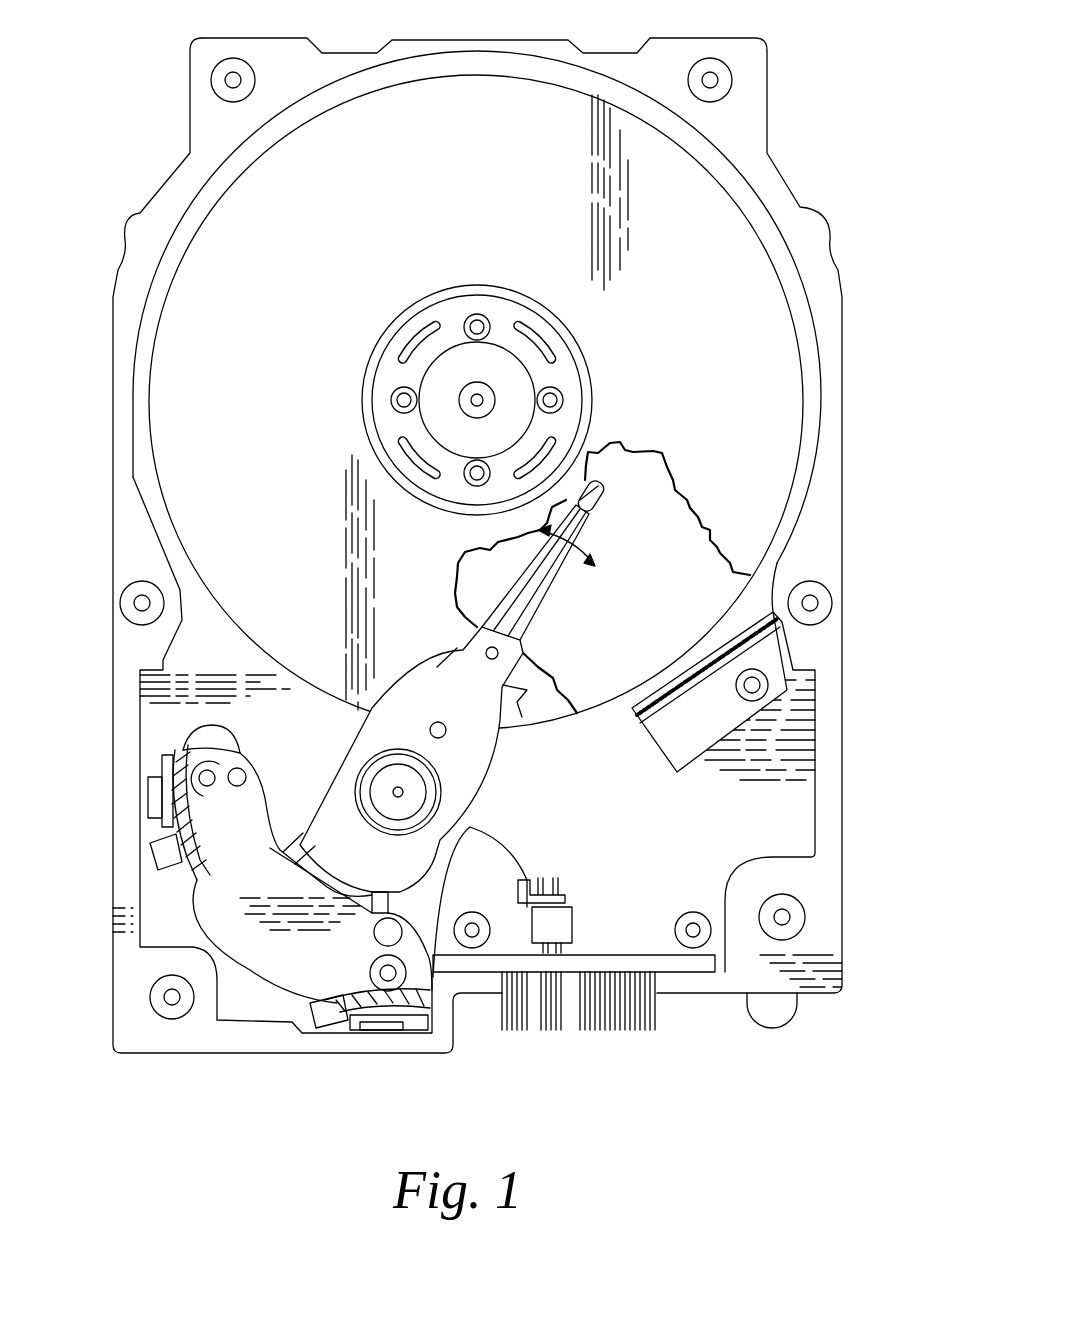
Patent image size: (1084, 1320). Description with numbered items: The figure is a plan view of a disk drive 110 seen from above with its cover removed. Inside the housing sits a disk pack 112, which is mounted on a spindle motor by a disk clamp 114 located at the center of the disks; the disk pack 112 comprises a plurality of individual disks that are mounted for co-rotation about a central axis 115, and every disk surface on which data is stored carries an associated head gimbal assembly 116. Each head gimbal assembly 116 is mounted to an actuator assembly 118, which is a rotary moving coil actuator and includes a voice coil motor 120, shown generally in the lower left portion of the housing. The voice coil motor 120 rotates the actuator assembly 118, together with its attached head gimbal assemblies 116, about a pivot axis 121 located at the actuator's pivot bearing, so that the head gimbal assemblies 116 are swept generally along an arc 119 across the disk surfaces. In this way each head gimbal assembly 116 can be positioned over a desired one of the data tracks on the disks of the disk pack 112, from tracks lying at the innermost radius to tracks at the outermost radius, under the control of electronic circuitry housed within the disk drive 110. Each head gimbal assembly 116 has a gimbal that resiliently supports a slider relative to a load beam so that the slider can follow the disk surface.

The disc drive 110 is at (824, 78).
The disk pack 112 is at (516, 183).
The disk clamp 114 is at (400, 306).
The central axis 115 is at (479, 398).
The head gimbal assembly 116 is at (602, 480).
The actuator assembly 118 is at (528, 675).
The arc 119 is at (568, 545).
The voice coil motor 120 is at (237, 893).
The pivot axis 121 is at (396, 791).